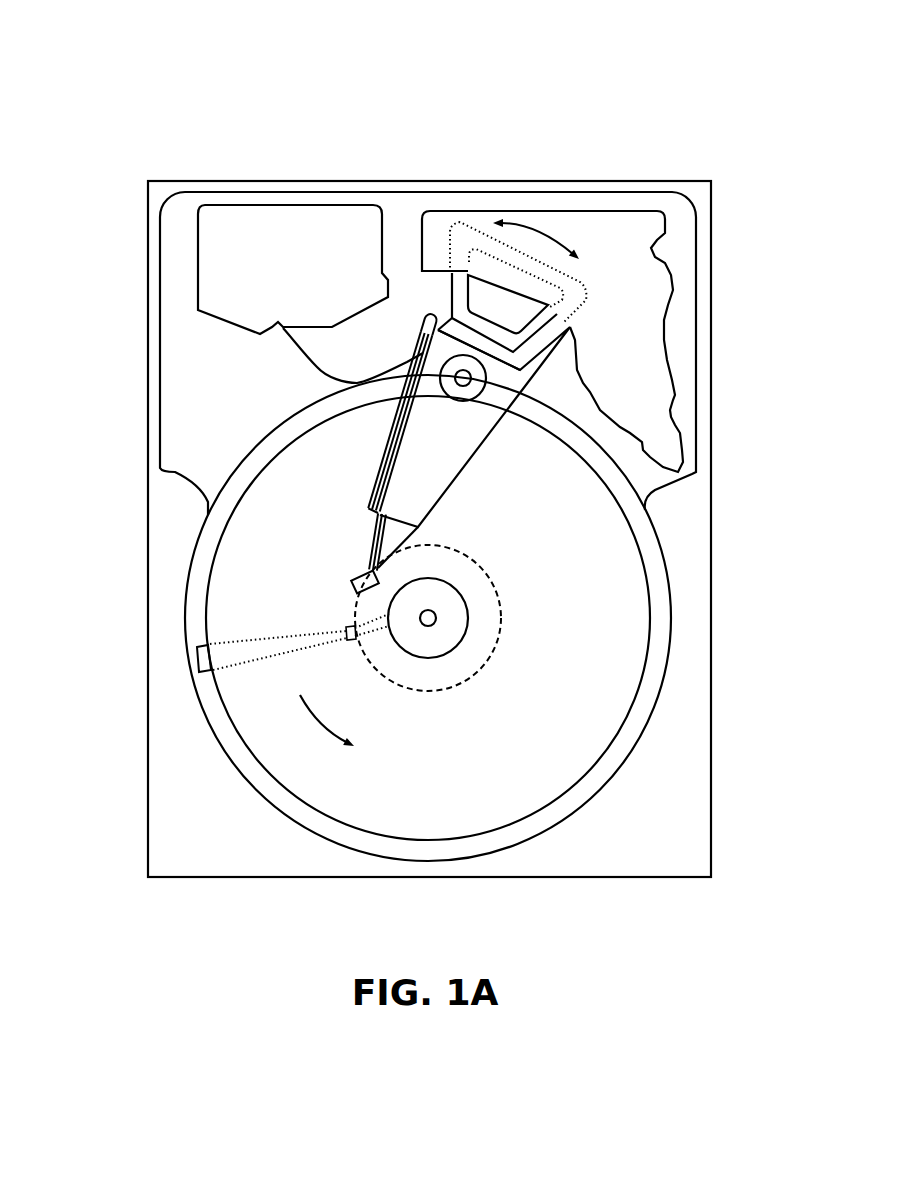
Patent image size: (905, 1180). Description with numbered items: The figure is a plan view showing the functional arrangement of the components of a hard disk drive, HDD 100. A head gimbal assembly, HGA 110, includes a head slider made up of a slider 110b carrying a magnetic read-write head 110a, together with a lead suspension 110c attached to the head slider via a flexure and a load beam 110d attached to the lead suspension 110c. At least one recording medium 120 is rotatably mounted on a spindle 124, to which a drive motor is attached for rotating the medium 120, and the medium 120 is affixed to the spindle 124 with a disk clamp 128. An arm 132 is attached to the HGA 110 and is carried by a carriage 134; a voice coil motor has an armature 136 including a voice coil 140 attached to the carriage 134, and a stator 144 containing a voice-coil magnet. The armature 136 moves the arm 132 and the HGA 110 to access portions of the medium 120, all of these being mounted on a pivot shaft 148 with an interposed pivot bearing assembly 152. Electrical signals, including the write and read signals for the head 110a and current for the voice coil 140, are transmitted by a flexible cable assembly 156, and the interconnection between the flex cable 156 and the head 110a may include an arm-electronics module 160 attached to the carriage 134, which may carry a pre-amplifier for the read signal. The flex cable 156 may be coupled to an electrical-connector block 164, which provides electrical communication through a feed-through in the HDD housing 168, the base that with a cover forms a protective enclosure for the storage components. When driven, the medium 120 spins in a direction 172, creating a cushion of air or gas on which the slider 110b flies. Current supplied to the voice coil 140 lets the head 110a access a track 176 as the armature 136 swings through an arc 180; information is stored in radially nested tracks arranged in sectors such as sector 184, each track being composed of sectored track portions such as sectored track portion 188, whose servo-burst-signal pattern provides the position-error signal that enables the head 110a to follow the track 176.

The hard disk drive 100 is at (88, 74).
The head gimbal assembly 110 is at (80, 455).
The magnetic read-write head 110a is at (355, 590).
The slider 110b is at (372, 563).
The lead suspension 110c is at (375, 537).
The load beam 110d is at (368, 512).
The recording medium 120 is at (590, 575).
The spindle 124 is at (470, 618).
The disk clamp 128 is at (455, 636).
The arm 132 is at (423, 478).
The carriage 134 is at (480, 405).
The armature 136 is at (447, 313).
The voice coil 140 is at (460, 283).
The stator 144 is at (650, 295).
The pivot shaft 148 is at (472, 378).
The pivot bearing assembly 152 is at (478, 390).
The flexible cable assembly 156 is at (300, 357).
The arm-electronics module 160 is at (420, 347).
The electrical-connector block 164 is at (218, 268).
The HDD housing 168 is at (697, 192).
The direction 172 is at (332, 724).
The track 176 is at (497, 578).
The arc 180 is at (537, 227).
The sector 184 is at (197, 660).
The sectored track portion 188 is at (342, 630).